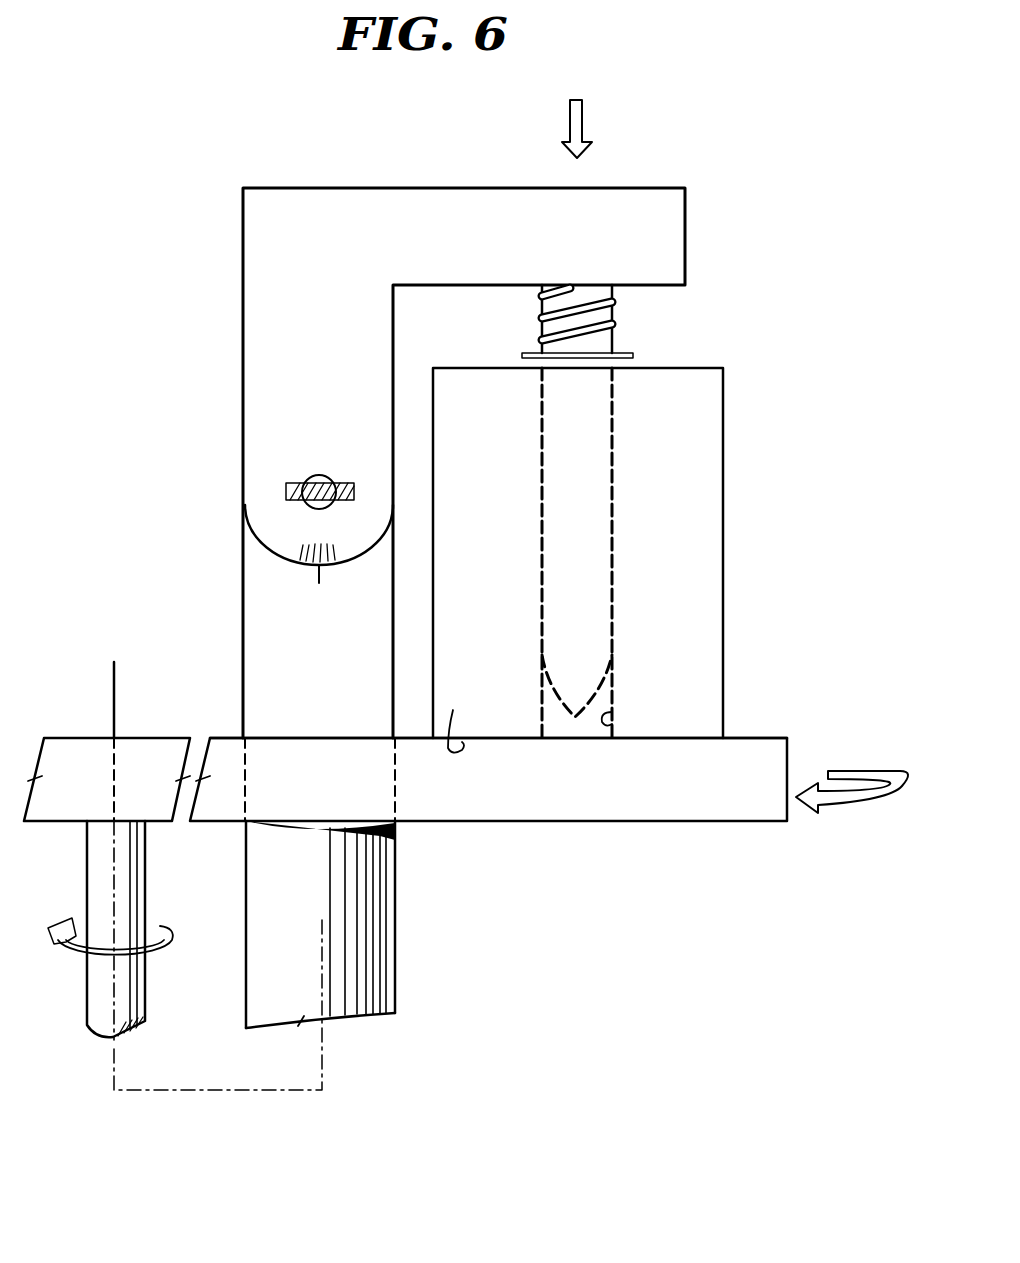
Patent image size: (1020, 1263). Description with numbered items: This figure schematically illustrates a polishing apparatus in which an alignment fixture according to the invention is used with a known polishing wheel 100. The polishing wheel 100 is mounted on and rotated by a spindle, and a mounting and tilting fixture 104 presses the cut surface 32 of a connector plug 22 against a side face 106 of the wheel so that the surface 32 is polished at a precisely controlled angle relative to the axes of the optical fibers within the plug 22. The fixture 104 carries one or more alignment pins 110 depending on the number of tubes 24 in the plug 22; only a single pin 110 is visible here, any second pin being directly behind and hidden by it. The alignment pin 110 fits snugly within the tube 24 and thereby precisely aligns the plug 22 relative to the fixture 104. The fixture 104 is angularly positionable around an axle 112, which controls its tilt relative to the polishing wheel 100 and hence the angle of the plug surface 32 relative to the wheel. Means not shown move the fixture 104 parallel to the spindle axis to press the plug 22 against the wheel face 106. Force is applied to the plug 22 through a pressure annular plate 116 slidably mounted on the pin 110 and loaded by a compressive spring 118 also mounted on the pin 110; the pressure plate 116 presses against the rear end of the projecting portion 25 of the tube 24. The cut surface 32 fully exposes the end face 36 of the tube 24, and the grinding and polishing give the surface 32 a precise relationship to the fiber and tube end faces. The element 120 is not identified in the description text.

The mounting and tilting fixture 104 is at (292, 208).
The axle 112 is at (319, 475).
The compressive spring 118 is at (618, 288).
The pressure annular plate 116 is at (635, 355).
The projecting portion 25 is at (530, 357).
The plug 22 is at (707, 522).
The tube 24 is at (540, 490).
The alignment pin 110 is at (588, 448).
The end face 36 is at (608, 720).
The cut surface 32 is at (459, 717).
The polishing wheel 100 is at (762, 766).
The side face 106 is at (753, 733).
The shaft 120 is at (146, 997).